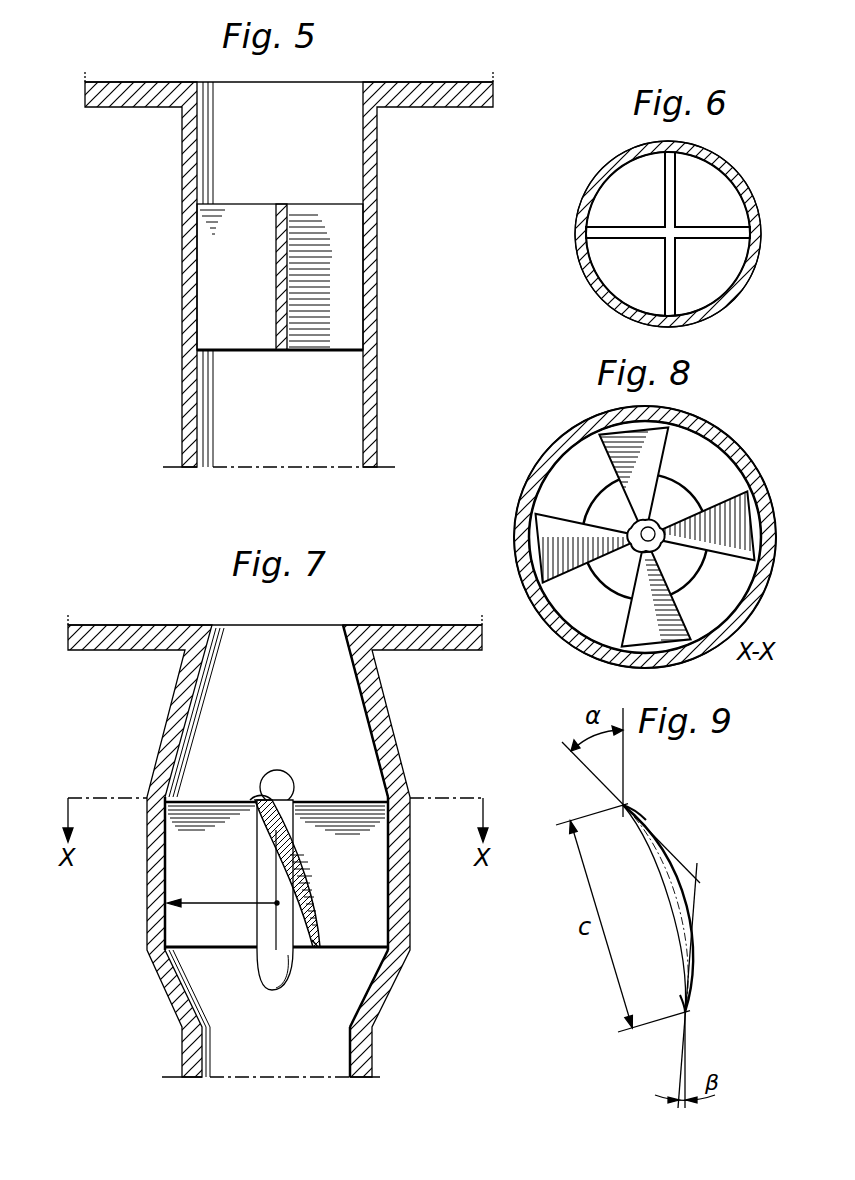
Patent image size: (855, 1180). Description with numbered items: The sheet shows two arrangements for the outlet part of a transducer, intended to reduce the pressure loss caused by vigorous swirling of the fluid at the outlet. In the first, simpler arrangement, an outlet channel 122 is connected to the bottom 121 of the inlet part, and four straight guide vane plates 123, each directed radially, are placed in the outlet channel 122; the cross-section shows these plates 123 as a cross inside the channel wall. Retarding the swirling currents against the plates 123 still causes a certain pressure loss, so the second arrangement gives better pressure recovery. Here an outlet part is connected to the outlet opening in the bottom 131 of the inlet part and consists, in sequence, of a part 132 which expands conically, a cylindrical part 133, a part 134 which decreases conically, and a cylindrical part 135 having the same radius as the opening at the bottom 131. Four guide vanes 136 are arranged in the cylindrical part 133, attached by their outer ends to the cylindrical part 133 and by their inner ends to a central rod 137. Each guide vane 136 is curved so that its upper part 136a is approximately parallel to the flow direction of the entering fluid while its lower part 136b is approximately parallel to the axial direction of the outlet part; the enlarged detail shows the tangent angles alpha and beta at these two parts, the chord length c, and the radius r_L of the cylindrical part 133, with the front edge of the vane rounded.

In FIG. 5, the bottom of the inlet part 121 is at (468, 83).
In FIG. 6, the outlet channel 122 is at (742, 185).
In FIG. 5, the guide vane plate 123 is at (337, 227).
In FIG. 6, the guide vane plate 123 is at (663, 270).
In FIG. 7, the bottom of the inlet part 131 is at (392, 641).
In FIG. 7, the conically expanding part 132 is at (377, 712).
In FIG. 8, the cylindrical part 133 is at (738, 464).
In FIG. 7, the cylindrical part 133 is at (402, 870).
In FIG. 7, the conically decreasing part 134 is at (380, 982).
In FIG. 7, the cylindrical part 135 is at (360, 1055).
In FIG. 8, the guide vane 136 is at (607, 455).
In FIG. 7, the guide vane 136 is at (192, 868).
In FIG. 7, the upper part of the guide vane 136a is at (255, 803).
In FIG. 9, the upper part of the guide vane 136a is at (632, 803).
In FIG. 7, the lower part of the guide vane 136b is at (318, 930).
In FIG. 9, the lower part of the guide vane 136b is at (683, 1007).
In FIG. 8, the central rod 137 is at (687, 472).
In FIG. 7, the central rod 137 is at (280, 790).